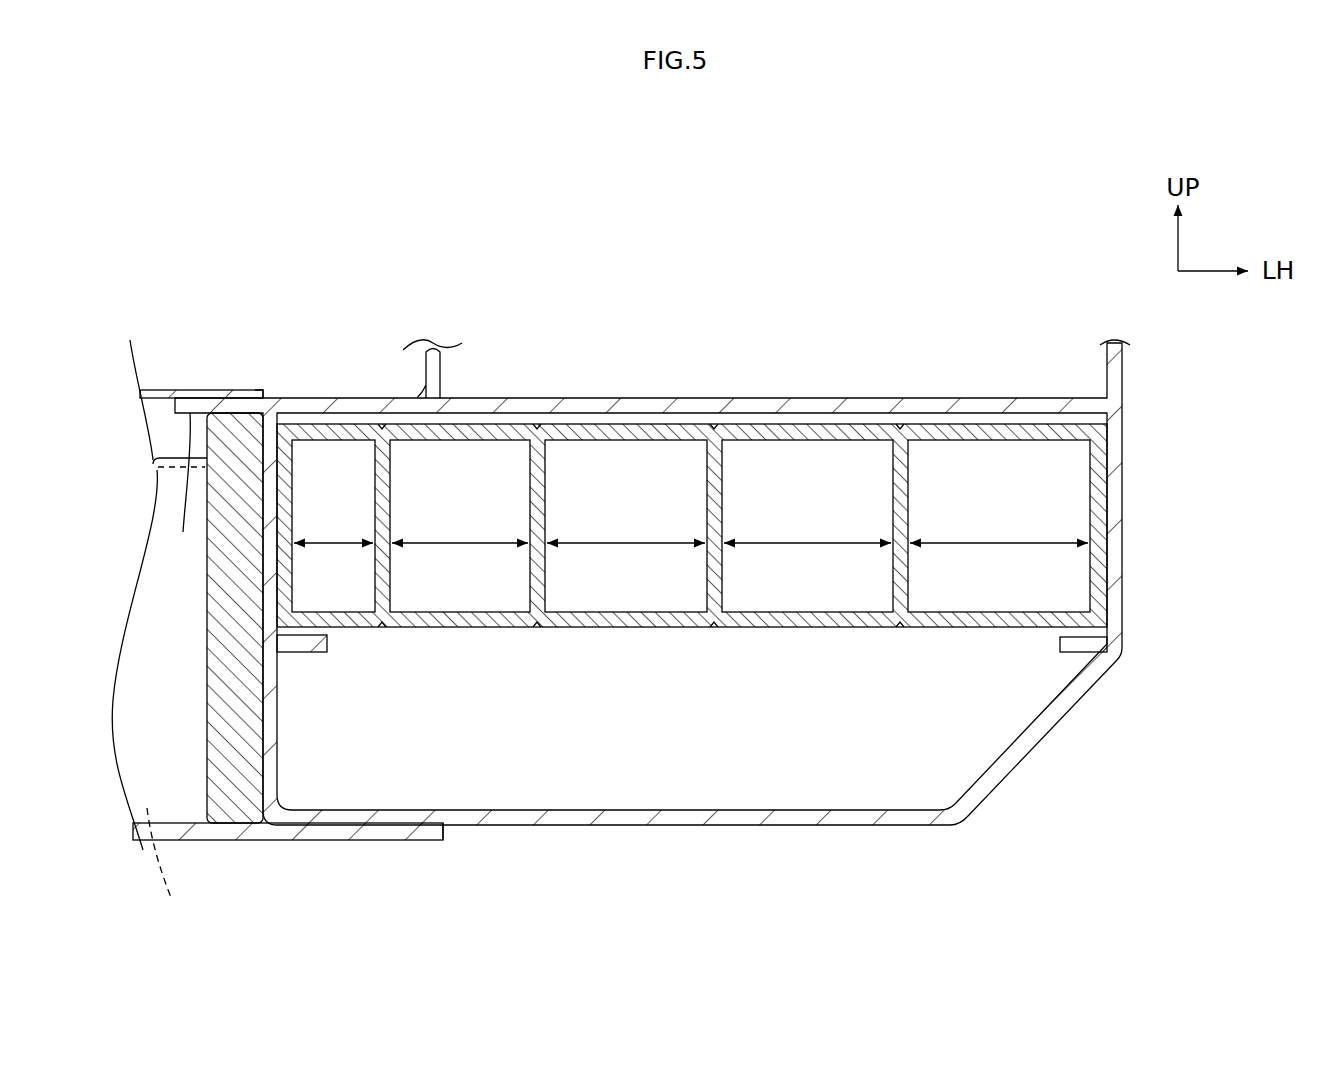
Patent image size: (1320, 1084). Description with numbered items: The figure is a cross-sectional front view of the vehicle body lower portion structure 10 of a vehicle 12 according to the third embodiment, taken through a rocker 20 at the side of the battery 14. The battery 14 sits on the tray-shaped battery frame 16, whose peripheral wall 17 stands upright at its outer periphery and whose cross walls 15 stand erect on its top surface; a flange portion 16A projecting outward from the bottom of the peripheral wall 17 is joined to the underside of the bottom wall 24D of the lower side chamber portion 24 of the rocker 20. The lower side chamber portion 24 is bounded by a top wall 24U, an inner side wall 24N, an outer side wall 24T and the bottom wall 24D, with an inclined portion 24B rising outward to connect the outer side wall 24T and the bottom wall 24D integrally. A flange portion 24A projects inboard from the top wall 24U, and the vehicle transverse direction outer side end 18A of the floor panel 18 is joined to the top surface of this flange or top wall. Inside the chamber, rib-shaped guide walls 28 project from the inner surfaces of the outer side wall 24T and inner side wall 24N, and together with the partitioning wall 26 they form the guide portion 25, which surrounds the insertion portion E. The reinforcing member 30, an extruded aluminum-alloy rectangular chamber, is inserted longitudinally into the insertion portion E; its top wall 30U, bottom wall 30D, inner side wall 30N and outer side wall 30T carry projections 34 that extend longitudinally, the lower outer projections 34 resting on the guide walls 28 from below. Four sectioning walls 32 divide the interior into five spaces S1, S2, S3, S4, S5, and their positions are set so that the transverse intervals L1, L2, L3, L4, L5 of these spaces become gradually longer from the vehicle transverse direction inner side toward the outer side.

The vehicle body lower portion structure 10 is at (815, 858).
The vehicle 12 is at (642, 262).
The battery 14 is at (175, 452).
The cross wall 15 is at (174, 869).
The battery frame 16 is at (235, 845).
The flange portion 16A is at (445, 842).
The peripheral wall 17 is at (240, 815).
The floor panel 18 is at (194, 388).
The vehicle transverse direction outer side end 18A is at (263, 396).
The rocker 20 is at (692, 584).
The lower side chamber portion 24 is at (1128, 462).
The top wall 24U is at (345, 397).
The inner side wall 24N is at (270, 688).
The bottom wall 24D is at (605, 827).
The outer side wall 24T is at (1124, 545).
The inclined portion 24B is at (1046, 740).
The flange portion 24A is at (180, 486).
The guide portion 25 is at (692, 532).
The partitioning wall 26 is at (835, 397).
The guide wall 28 is at (330, 652).
The reinforcing member 30 is at (699, 507).
The top wall 30U is at (690, 423).
The bottom wall 30D is at (812, 628).
The inner side wall 30N is at (280, 548).
The outer side wall 30T is at (1108, 565).
The sectioning wall 32 is at (395, 465).
The projection 34 is at (278, 423).
The insertion portion E is at (517, 641).
The space S1 is at (318, 518).
The space S2 is at (445, 518).
The space S3 is at (615, 518).
The space S4 is at (790, 518).
The space S5 is at (980, 518).
The interval L1 is at (345, 547).
The interval L2 is at (462, 547).
The interval L3 is at (630, 547).
The interval L4 is at (810, 547).
The interval L5 is at (994, 547).